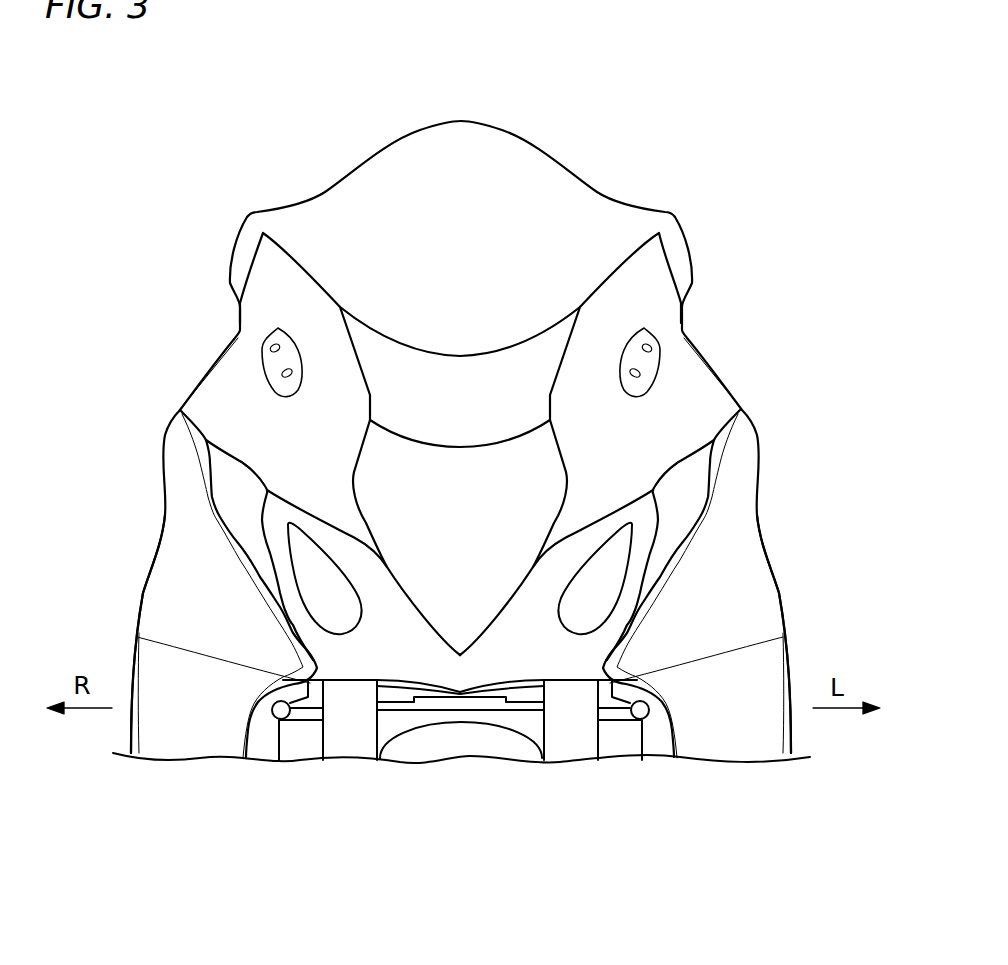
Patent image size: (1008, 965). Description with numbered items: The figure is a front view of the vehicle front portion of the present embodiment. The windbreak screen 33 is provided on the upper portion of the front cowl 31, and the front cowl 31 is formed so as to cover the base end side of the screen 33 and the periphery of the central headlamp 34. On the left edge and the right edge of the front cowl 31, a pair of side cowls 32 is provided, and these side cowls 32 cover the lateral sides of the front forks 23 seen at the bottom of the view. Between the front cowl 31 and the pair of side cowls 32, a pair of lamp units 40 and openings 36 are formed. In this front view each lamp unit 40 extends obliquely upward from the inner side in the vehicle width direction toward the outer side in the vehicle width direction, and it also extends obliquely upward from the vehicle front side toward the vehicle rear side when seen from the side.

The front cowl 31 is at (207, 325).
The side cowl 32 is at (160, 582).
The windbreak screen 33 is at (507, 137).
The central headlamp 34 is at (550, 487).
The lamp unit 40 is at (227, 481).
The opening 36 is at (568, 628).
The front fork 23 is at (387, 760).